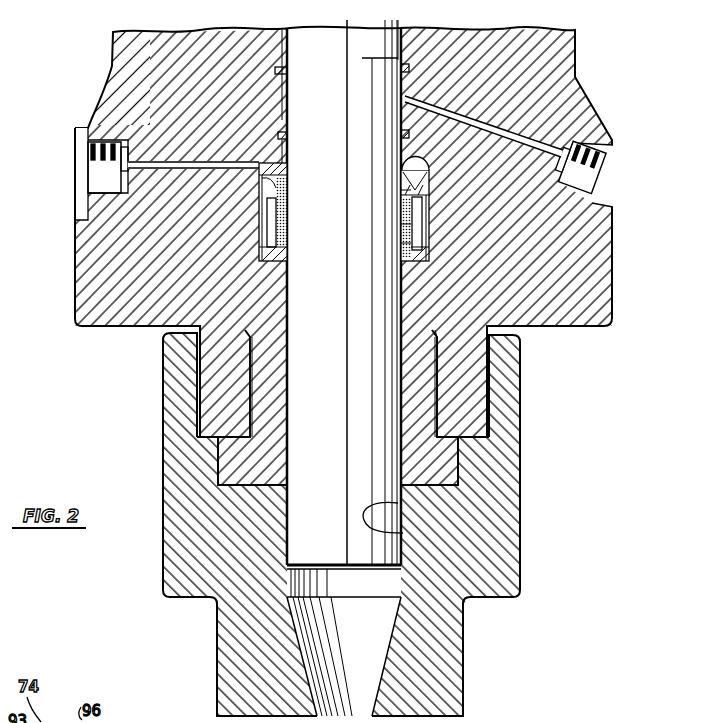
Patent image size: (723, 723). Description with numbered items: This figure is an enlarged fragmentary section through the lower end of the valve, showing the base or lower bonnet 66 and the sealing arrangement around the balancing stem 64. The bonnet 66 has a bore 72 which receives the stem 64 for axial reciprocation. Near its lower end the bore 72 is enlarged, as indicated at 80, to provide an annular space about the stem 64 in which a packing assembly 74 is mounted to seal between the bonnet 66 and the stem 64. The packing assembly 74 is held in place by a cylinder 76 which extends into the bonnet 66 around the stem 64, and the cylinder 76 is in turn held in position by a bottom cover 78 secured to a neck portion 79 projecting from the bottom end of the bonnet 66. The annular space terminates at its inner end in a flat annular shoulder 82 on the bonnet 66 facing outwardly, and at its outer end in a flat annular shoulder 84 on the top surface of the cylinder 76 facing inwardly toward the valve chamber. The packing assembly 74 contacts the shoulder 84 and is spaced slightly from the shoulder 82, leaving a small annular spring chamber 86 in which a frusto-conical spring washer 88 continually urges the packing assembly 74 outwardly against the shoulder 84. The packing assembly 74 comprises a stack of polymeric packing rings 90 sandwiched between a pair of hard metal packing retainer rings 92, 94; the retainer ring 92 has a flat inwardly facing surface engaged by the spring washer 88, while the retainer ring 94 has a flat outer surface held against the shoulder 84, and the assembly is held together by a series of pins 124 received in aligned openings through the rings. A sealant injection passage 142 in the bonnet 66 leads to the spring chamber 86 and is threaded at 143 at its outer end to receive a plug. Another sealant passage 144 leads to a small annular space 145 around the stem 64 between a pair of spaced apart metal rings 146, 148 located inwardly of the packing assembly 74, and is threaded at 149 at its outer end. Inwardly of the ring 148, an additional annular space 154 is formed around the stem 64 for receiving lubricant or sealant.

The lower bonnet 66 is at (580, 272).
The bottom cover 78 is at (487, 515).
The neck portion 79 is at (212, 408).
The cylinder 76 is at (411, 397).
The balancing stem 64 is at (407, 67).
The annular space 154 is at (407, 30).
The bore 72 is at (404, 533).
The annular space 145 is at (288, 98).
The metal ring 148 is at (274, 72).
The metal ring 146 is at (277, 134).
The sealant injection passage 142 is at (200, 162).
The threaded portion 143 is at (106, 180).
The sealant passage 144 is at (478, 126).
The threaded portion 149 is at (578, 178).
The enlarged bore portion 80 is at (265, 226).
The frusto-conical spring washer 88 is at (288, 166).
The pins 124 is at (288, 207).
The annular shoulder 84 is at (288, 247).
The packing assembly 74 is at (425, 213).
The spring chamber 86 is at (406, 156).
The annular shoulder 82 is at (429, 170).
The packing retainer ring 92 is at (401, 192).
The packing rings 90 is at (401, 224).
The packing retainer ring 94 is at (401, 243).